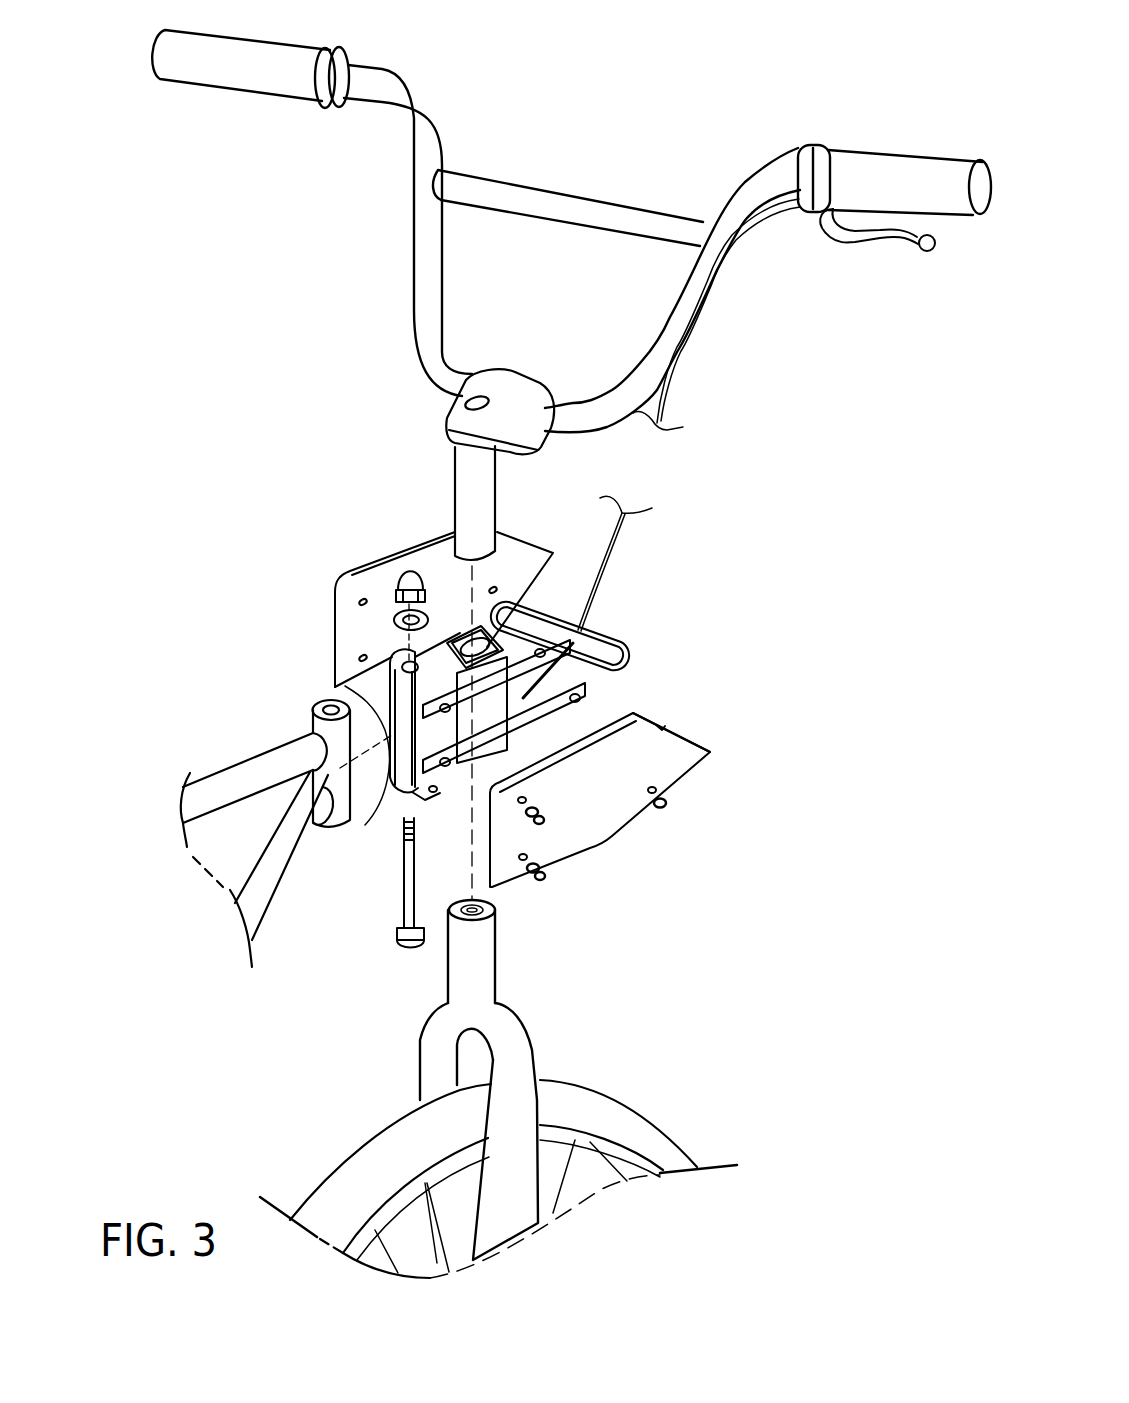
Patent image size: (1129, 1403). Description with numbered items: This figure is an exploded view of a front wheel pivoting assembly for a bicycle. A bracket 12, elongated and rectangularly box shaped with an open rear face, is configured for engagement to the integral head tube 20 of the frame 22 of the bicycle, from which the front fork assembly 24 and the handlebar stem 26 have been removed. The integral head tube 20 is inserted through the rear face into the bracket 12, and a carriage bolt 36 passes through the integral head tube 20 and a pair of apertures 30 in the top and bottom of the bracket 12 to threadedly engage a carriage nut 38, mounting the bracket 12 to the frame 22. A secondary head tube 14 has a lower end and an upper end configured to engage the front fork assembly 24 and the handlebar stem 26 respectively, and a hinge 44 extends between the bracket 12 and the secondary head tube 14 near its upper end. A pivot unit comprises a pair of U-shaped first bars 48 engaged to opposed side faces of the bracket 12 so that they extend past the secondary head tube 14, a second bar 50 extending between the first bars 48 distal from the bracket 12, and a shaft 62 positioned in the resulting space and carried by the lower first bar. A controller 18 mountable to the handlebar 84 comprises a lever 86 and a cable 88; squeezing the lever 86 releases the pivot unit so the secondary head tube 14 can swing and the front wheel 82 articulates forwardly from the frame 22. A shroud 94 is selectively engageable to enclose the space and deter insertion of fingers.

The bracket 12 is at (405, 780).
The secondary head tube 14 is at (487, 713).
The controller 18 is at (831, 228).
The integral head tube 20 is at (310, 708).
The frame 22 is at (227, 787).
The front fork assembly 24 is at (518, 1035).
The handlebar stem 26 is at (463, 492).
The apertures 30 is at (345, 686).
The carriage bolt 36 is at (410, 907).
The carriage nut 38 is at (372, 560).
The hinge 44 is at (449, 668).
The first bars 48 is at (563, 717).
The second bar 50 is at (603, 637).
The shaft 62 is at (618, 647).
The front wheel 82 is at (617, 1113).
The handlebar 84 is at (410, 98).
The lever 86 is at (879, 238).
The cable 88 is at (705, 322).
The shroud 94 is at (677, 750).